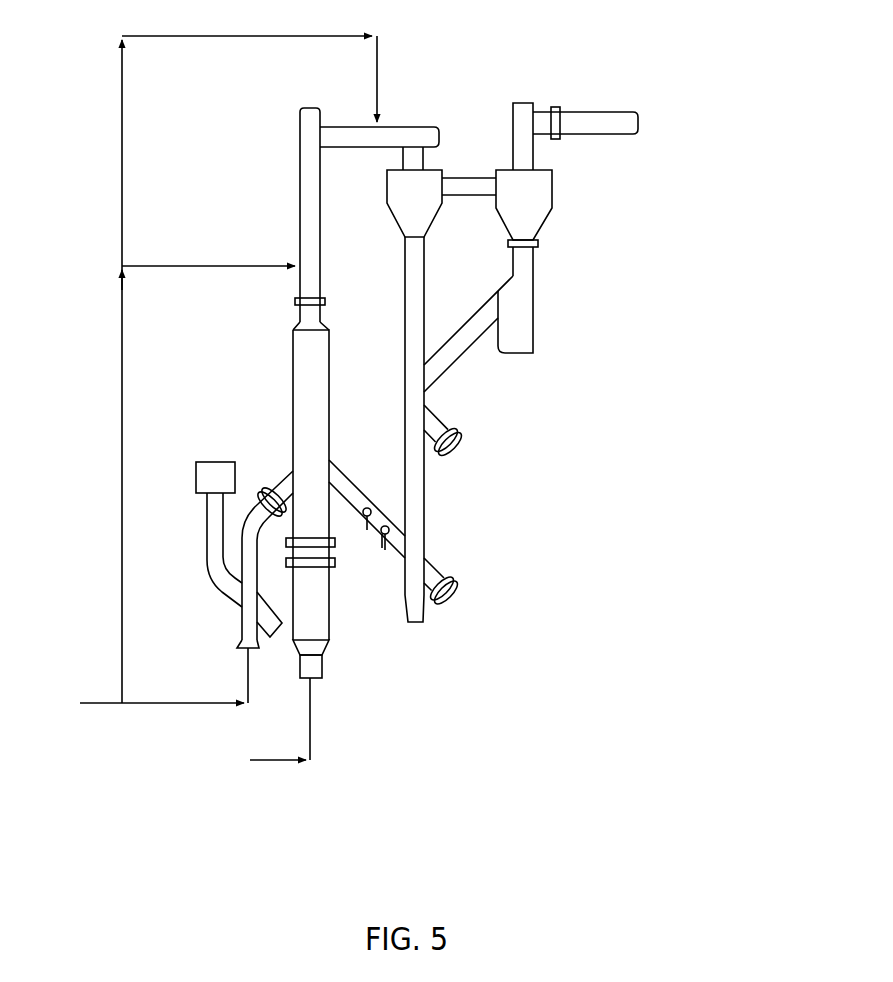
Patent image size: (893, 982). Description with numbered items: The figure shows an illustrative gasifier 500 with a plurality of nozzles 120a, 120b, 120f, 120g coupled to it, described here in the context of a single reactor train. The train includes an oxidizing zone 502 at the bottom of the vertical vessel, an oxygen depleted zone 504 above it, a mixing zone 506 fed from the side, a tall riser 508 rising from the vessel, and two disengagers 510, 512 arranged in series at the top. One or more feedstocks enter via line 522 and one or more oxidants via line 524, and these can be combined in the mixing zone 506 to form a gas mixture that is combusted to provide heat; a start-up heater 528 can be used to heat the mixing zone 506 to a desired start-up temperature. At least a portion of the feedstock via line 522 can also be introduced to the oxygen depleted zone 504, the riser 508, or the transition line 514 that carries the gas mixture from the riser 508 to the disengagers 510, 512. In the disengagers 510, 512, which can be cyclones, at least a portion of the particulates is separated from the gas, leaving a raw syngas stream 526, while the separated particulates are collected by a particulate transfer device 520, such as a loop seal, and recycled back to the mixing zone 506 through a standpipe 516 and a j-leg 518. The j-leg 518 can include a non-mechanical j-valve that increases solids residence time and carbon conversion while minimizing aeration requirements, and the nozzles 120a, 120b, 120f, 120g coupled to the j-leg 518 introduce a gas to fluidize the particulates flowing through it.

The gasifier 500 is at (582, 436).
The oxidizing zone 502 is at (330, 622).
The oxygen depleted zone 504 is at (316, 352).
The mixing zone 506 is at (293, 408).
The riser 508 is at (300, 185).
The disengager 510 is at (395, 215).
The disengager 512 is at (540, 215).
The transition line 514 is at (406, 133).
The standpipe 516 is at (420, 477).
The j-leg 518 is at (398, 528).
The particulate transfer device 520 is at (522, 348).
The line 522 is at (100, 703).
The line 524 is at (270, 763).
The raw syngas stream 526 is at (652, 123).
The start-up heater 528 is at (206, 462).
The nozzle 120a is at (395, 546).
The nozzle 120b is at (377, 550).
The nozzle 120f is at (384, 508).
The nozzle 120g is at (356, 525).